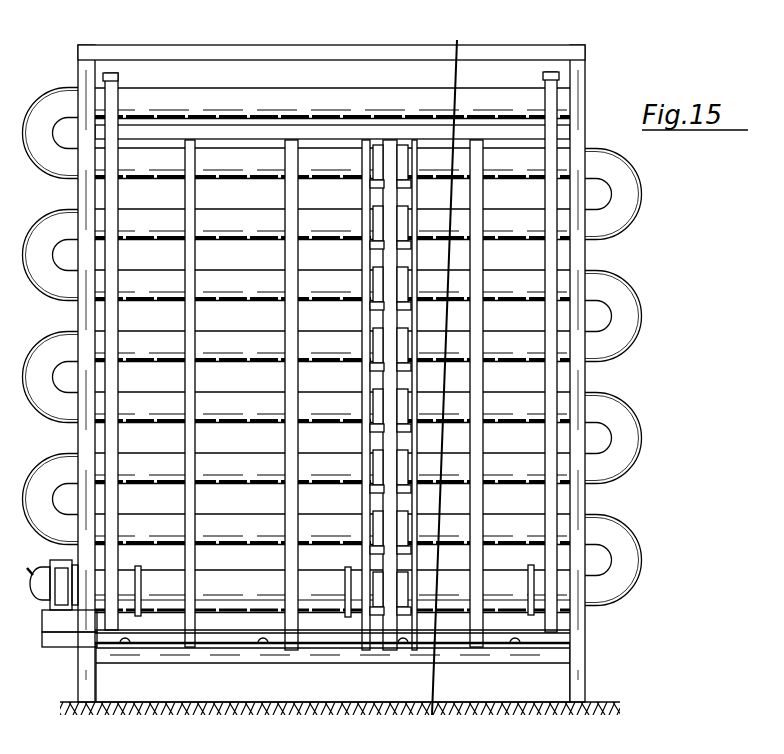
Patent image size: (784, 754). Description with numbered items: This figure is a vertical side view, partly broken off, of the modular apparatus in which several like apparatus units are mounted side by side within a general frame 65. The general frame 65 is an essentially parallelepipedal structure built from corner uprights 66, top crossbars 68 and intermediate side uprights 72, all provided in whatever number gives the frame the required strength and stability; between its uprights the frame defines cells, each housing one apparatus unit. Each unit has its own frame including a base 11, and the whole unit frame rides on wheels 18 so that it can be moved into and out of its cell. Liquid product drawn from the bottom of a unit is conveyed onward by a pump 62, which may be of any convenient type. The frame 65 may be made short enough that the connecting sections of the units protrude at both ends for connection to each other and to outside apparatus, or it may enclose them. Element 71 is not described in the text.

The base 11 is at (339, 636).
The wheels 18 is at (515, 637).
The pump 62 is at (48, 597).
The general frame 65 is at (594, 378).
The corner uprights 66 is at (585, 258).
The top crossbars 68 is at (428, 50).
The base beam 71 is at (222, 643).
The intermediate side uprights 72 is at (188, 203).